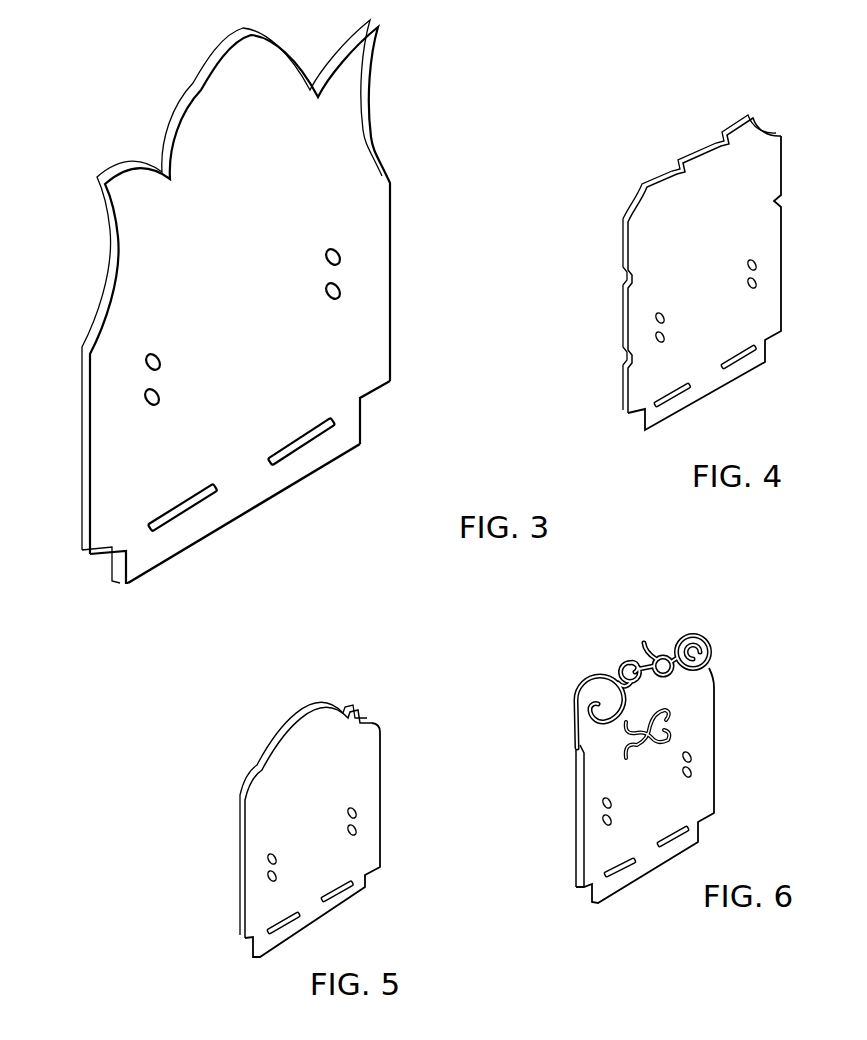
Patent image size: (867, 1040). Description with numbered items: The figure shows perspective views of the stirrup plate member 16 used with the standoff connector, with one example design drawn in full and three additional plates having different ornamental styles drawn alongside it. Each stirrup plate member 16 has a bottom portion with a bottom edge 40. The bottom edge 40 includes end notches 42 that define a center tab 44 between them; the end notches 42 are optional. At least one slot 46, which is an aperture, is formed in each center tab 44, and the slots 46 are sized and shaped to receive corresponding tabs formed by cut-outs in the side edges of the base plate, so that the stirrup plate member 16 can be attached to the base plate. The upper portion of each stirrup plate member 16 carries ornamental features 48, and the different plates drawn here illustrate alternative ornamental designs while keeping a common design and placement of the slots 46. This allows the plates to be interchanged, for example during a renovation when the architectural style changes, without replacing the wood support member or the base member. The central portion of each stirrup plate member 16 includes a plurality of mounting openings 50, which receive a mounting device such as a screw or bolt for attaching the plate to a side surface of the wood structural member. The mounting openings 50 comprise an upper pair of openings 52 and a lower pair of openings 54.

The stirrup plate member 16 is at (300, 349).
The bottom edge 40 is at (207, 533).
The end notches 42 is at (388, 426).
The center tab 44 is at (252, 475).
The slot 46 is at (160, 510).
The ornamental features 48 is at (130, 118).
The mounting openings 50 is at (357, 300).
The upper pair of openings 52 is at (160, 352).
The lower pair of openings 54 is at (160, 395).